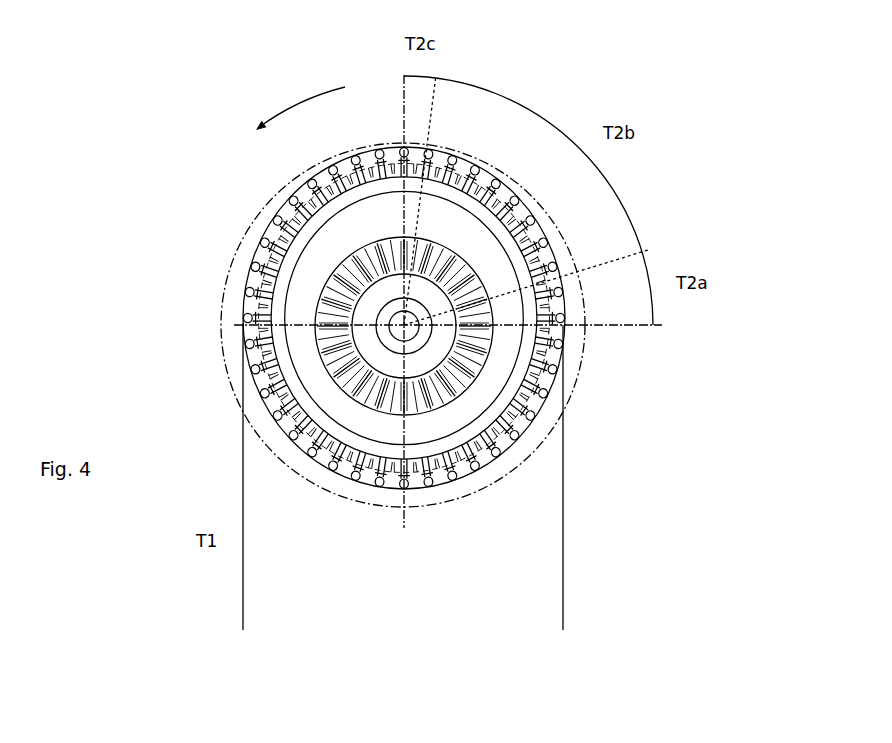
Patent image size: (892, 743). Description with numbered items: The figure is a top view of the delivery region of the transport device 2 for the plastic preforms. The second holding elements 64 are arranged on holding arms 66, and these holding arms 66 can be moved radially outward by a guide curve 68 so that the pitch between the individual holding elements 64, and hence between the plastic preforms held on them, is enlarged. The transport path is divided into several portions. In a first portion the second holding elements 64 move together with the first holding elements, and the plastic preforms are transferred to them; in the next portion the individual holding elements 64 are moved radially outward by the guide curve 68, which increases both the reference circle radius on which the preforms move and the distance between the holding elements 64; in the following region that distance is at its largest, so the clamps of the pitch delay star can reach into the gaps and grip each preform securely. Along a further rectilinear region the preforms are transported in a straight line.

The transport device 2 is at (578, 517).
The second holding elements 64 is at (318, 174).
The holding arms 66 is at (272, 247).
The guide curve 68 is at (406, 268).